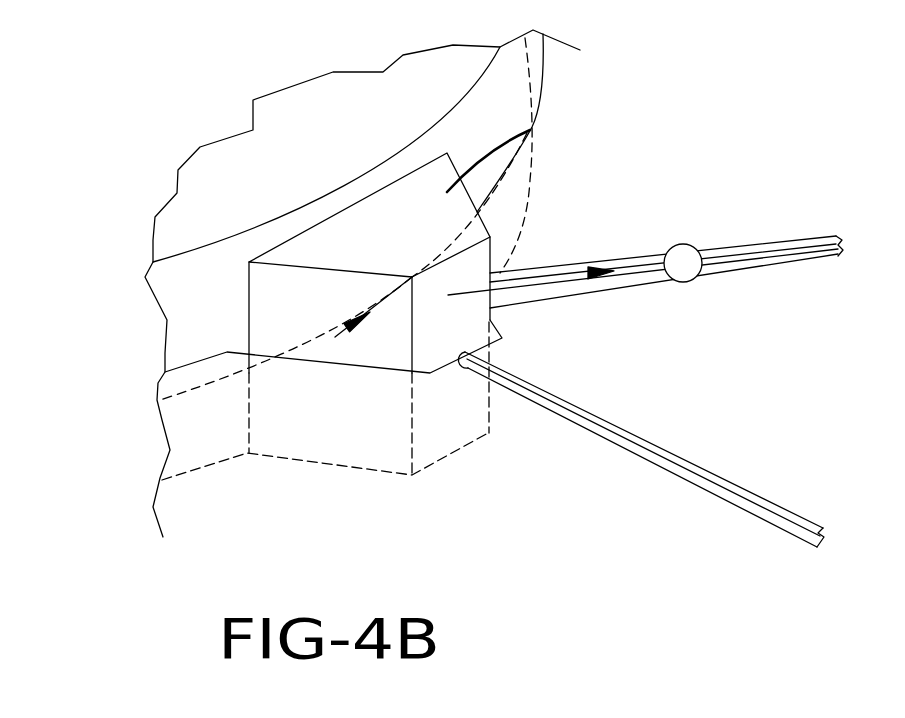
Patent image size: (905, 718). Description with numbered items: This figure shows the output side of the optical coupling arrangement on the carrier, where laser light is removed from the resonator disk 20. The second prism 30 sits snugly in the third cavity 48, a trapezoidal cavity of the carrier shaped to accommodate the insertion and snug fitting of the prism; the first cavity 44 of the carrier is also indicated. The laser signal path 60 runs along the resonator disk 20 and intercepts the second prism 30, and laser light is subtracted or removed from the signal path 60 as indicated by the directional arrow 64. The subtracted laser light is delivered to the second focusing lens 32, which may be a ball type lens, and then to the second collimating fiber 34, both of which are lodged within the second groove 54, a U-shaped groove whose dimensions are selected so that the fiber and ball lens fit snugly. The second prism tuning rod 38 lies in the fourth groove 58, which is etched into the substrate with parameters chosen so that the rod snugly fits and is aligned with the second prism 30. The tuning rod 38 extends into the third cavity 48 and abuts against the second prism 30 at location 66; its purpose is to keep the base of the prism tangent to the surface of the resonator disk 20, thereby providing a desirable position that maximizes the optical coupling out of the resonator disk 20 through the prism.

The resonator disk 20 is at (217, 200).
The second prism 30 is at (530, 130).
The second focusing lens 32 is at (683, 262).
The second collimating fiber 34 is at (777, 248).
The second prism tuning rod 38 is at (633, 440).
The first cavity 44 is at (197, 430).
The third cavity 48 is at (338, 427).
The second groove 54 is at (620, 290).
The fourth groove 58 is at (720, 500).
The laser signal path 60 is at (300, 350).
The directional arrow 64 is at (558, 281).
The location 66 is at (468, 367).